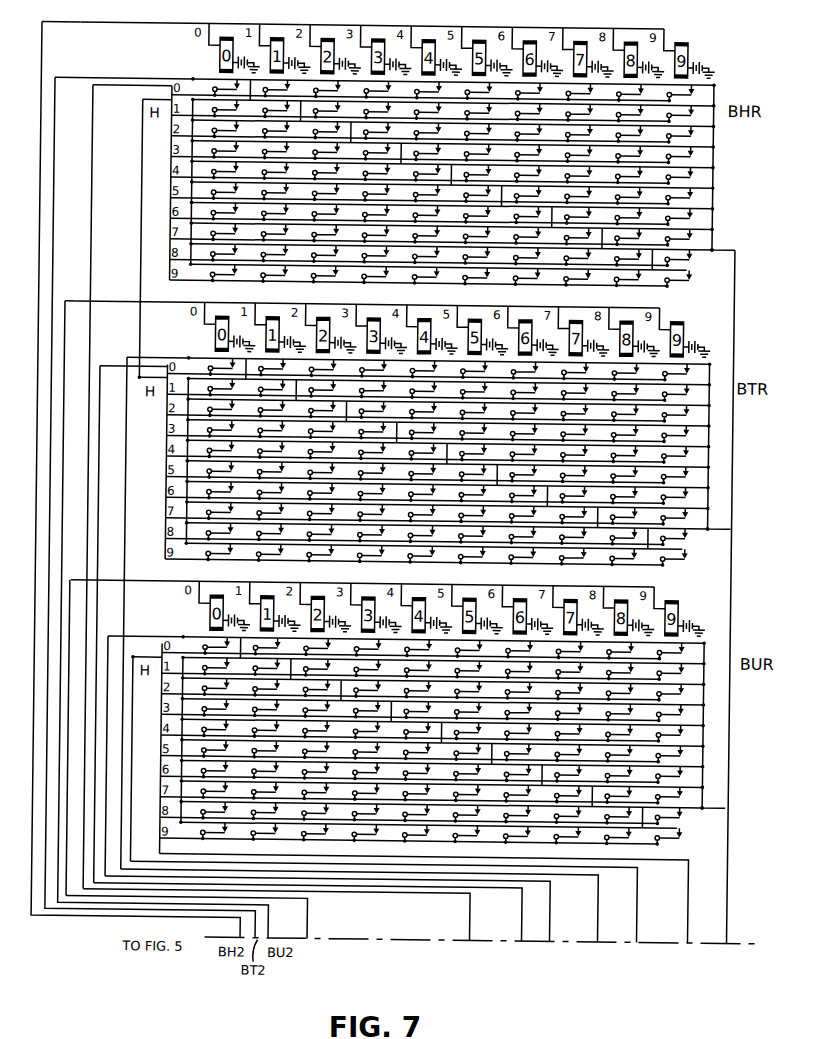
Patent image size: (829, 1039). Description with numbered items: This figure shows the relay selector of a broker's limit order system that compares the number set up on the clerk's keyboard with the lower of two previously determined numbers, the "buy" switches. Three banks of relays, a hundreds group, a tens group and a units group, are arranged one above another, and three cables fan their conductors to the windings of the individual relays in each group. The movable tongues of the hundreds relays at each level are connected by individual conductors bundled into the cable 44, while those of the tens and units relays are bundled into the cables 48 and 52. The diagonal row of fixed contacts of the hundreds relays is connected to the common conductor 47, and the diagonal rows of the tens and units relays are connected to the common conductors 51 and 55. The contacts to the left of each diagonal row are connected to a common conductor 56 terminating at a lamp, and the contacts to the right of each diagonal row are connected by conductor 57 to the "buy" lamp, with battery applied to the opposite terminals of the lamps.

The cable 44 is at (318, 928).
The common conductor 47 is at (532, 927).
The cable 48 is at (480, 927).
The common conductor 51 is at (698, 922).
The cable 52 is at (647, 927).
The common conductor 55 is at (608, 927).
The common conductor 56 is at (560, 927).
The conductor 57 is at (737, 890).